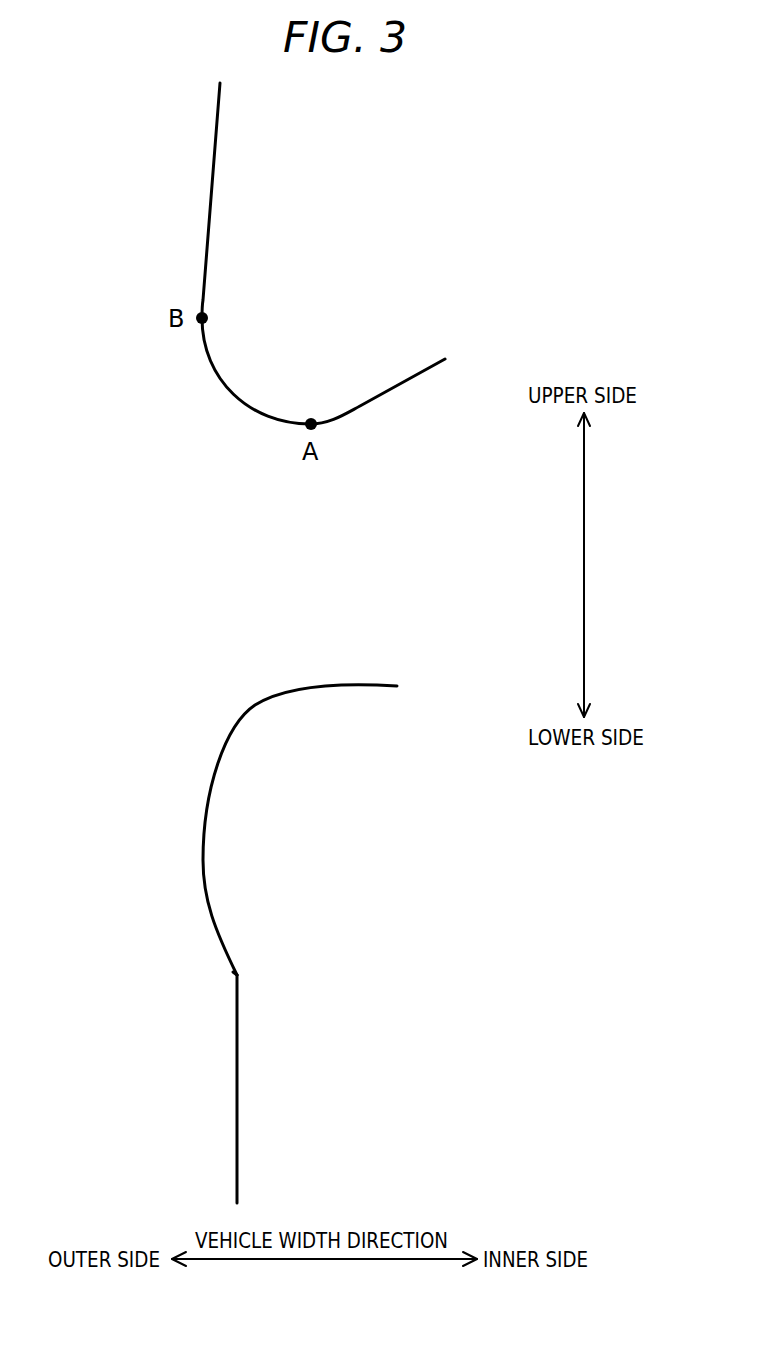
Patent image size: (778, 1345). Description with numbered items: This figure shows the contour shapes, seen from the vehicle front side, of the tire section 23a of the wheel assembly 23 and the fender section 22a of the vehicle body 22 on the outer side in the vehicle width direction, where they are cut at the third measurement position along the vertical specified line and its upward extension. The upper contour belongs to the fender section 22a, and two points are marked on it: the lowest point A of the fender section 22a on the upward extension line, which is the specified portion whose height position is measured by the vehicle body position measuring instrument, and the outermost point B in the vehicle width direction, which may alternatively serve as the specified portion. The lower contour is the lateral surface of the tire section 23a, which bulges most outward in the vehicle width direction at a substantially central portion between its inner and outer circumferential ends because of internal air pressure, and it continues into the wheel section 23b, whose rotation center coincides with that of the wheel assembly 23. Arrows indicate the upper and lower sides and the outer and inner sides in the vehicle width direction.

The vehicle body 22 is at (280, 253).
The fender section 22a is at (210, 208).
The wheel assembly 23 is at (234, 944).
The tire section 23a is at (213, 930).
The wheel section 23b is at (237, 1007).